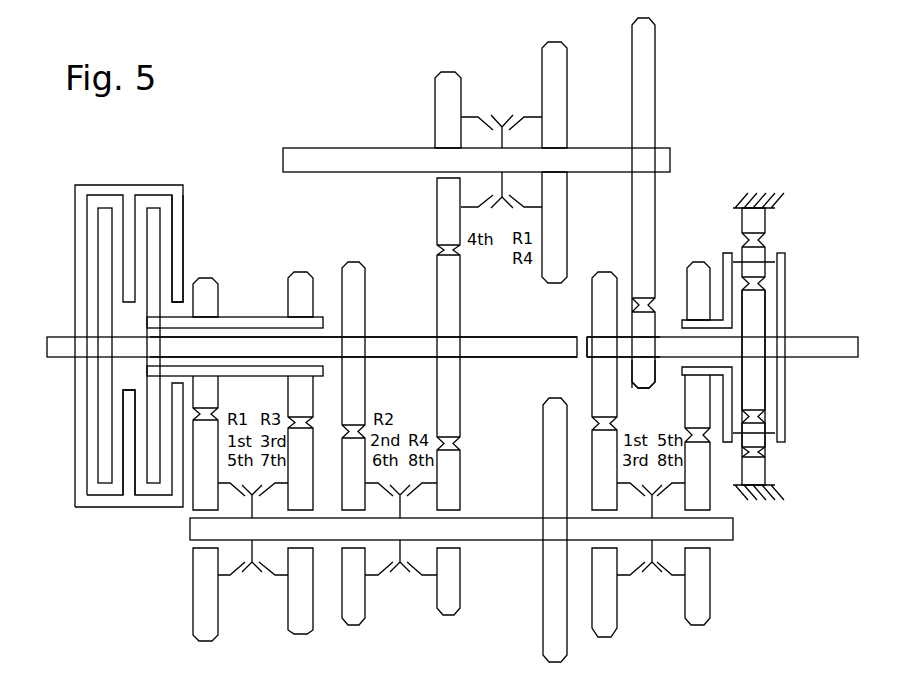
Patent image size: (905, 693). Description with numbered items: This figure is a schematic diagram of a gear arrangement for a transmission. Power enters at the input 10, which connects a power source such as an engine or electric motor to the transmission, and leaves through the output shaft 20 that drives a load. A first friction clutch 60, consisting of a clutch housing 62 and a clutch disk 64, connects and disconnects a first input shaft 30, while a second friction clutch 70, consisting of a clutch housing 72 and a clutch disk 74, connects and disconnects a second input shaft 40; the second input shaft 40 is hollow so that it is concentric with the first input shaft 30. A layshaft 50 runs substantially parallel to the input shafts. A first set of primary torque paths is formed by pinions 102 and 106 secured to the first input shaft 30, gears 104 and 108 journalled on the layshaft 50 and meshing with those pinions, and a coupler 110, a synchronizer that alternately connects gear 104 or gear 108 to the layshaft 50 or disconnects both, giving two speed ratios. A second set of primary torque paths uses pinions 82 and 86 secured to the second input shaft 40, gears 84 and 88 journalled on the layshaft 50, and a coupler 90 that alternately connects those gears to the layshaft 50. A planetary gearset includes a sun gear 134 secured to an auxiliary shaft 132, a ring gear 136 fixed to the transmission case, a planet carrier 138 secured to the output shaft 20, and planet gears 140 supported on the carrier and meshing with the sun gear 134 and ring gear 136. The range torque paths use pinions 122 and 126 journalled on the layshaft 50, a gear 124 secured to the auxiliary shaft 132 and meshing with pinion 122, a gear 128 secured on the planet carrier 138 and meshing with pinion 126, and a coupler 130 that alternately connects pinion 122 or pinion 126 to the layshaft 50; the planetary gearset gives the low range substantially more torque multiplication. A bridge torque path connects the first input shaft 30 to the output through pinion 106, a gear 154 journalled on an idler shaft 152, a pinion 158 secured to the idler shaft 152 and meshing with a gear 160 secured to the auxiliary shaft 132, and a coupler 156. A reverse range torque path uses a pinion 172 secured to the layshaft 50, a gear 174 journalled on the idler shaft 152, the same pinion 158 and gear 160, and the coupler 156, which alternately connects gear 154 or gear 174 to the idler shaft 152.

The input 10 is at (57, 336).
The output shaft 20 is at (827, 343).
The first input shaft 30 is at (376, 339).
The second input shaft 40 is at (240, 322).
The layshaft 50 is at (492, 527).
The first friction clutch 60 is at (118, 346).
The clutch housing 62 is at (82, 448).
The clutch disk 64 is at (103, 474).
The second friction clutch 70 is at (152, 184).
The clutch housing 72 is at (177, 262).
The clutch disk 74 is at (152, 227).
The pinion 82 is at (212, 292).
The gear 84 is at (198, 614).
The pinion 86 is at (300, 280).
The gear 88 is at (290, 613).
The coupler 90 is at (254, 590).
The pinion 102 is at (371, 248).
The gear 104 is at (347, 608).
The pinion 106 is at (446, 290).
The gear 108 is at (453, 598).
The coupler 110 is at (403, 588).
The pinion 122 is at (595, 622).
The gear 124 is at (600, 312).
The pinion 126 is at (707, 607).
The gear 128 is at (695, 278).
The coupler 130 is at (657, 589).
The auxiliary shaft 132 is at (597, 350).
The sun gear 134 is at (757, 377).
The ring gear 136 is at (757, 470).
The planet carrier 138 is at (782, 267).
The planet gears 140 is at (758, 438).
The idler shaft 152 is at (283, 149).
The gear 154 is at (445, 98).
The coupler 156 is at (507, 101).
The pinion 158 is at (655, 82).
The gear 160 is at (642, 377).
The pinion 172 is at (543, 578).
The gear 174 is at (557, 115).